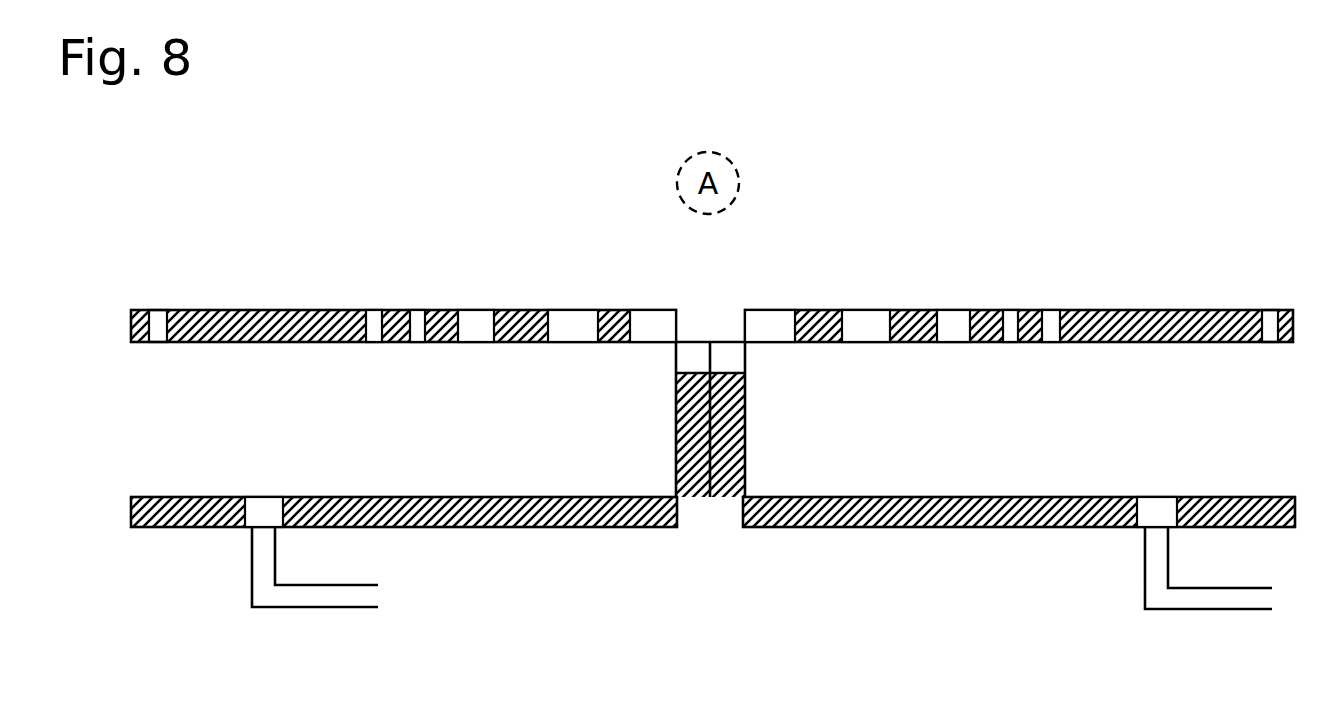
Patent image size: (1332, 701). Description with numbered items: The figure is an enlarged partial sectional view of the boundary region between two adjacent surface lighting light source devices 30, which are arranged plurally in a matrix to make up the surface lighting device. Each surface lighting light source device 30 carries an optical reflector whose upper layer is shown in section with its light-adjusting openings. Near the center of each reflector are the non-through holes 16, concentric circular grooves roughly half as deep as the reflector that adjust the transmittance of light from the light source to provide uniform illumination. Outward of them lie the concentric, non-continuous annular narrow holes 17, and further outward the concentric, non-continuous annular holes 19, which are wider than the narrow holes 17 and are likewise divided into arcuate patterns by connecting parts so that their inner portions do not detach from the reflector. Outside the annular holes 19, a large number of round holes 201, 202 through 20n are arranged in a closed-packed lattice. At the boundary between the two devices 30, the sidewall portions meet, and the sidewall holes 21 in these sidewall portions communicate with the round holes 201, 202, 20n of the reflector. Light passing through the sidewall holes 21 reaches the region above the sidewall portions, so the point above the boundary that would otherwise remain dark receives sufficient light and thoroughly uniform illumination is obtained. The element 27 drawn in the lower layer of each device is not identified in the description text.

The non-through holes 16 is at (304, 313).
The narrow holes 17 is at (350, 312).
The annular holes 19 is at (414, 320).
The circular hole 201 is at (465, 320).
The circular hole 202 is at (870, 268).
The circular hole 20n is at (647, 320).
The sidewall holes 21 is at (737, 342).
The lead electrode 27 is at (265, 510).
The surface lighting light source devices 30 is at (128, 277).